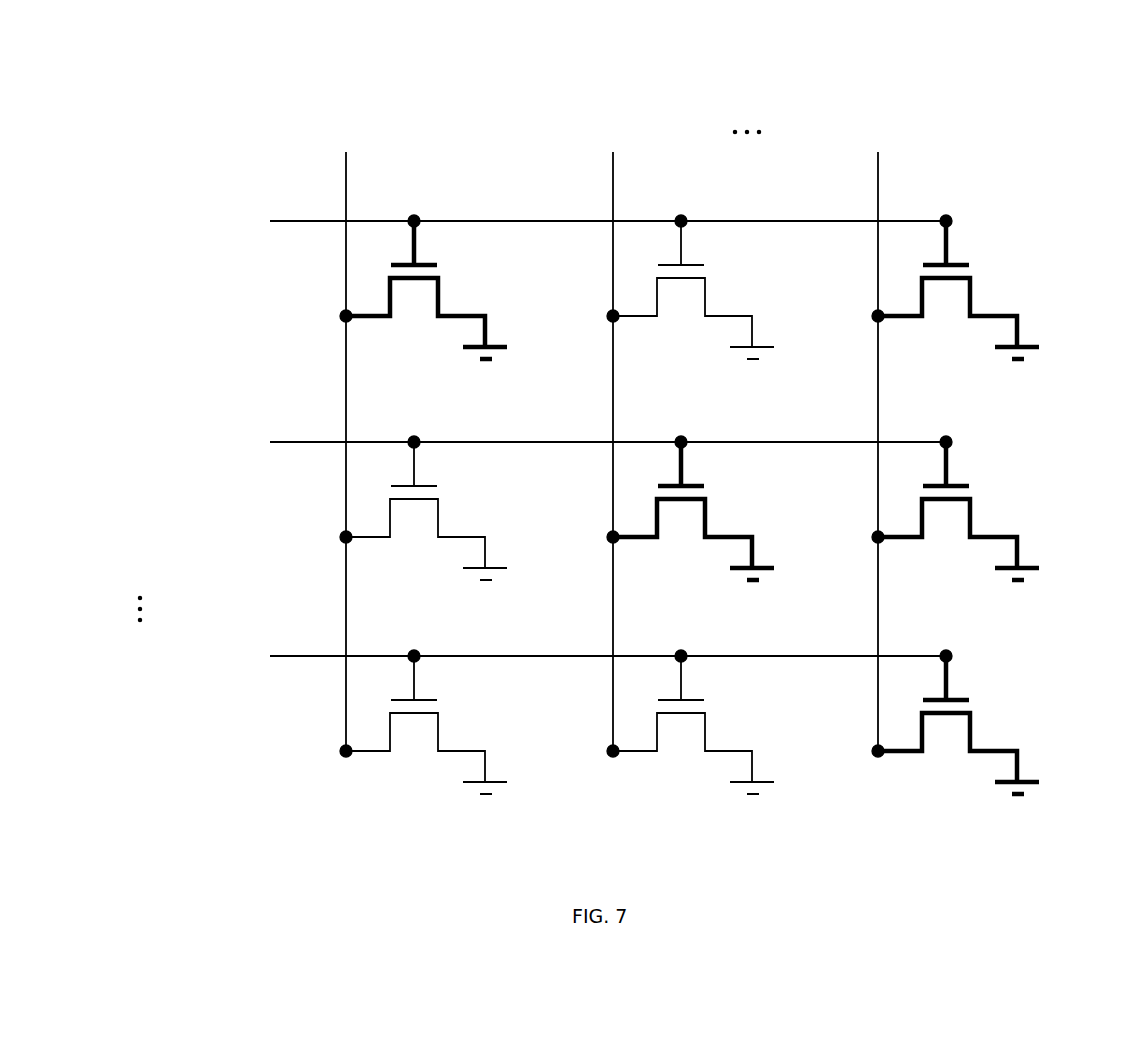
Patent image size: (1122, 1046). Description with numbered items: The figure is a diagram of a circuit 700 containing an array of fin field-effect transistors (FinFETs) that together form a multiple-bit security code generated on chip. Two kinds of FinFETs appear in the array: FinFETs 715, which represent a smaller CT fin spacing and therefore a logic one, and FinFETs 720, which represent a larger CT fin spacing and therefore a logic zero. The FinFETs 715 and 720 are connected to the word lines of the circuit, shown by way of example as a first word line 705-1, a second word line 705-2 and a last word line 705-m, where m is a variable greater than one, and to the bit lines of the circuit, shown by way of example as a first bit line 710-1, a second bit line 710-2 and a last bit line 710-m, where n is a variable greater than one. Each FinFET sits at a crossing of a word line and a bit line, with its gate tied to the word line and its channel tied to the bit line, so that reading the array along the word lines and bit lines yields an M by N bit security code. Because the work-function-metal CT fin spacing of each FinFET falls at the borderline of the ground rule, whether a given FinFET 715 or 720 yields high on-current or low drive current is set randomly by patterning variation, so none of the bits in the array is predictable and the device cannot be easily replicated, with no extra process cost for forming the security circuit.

The circuit 700 is at (538, 23).
The word line WL1 705-1 is at (228, 213).
The word line WL2 705-2 is at (228, 436).
The word line WLm 705-m is at (212, 650).
The bit line BL1 710-1 is at (325, 133).
The bit line BL2 710-2 is at (592, 133).
The bit line BLn 710-m is at (855, 133).
The FinFET with smaller CT fin spacing 715 is at (705, 297).
The FinFET with larger CT fin spacing 720 is at (438, 297).